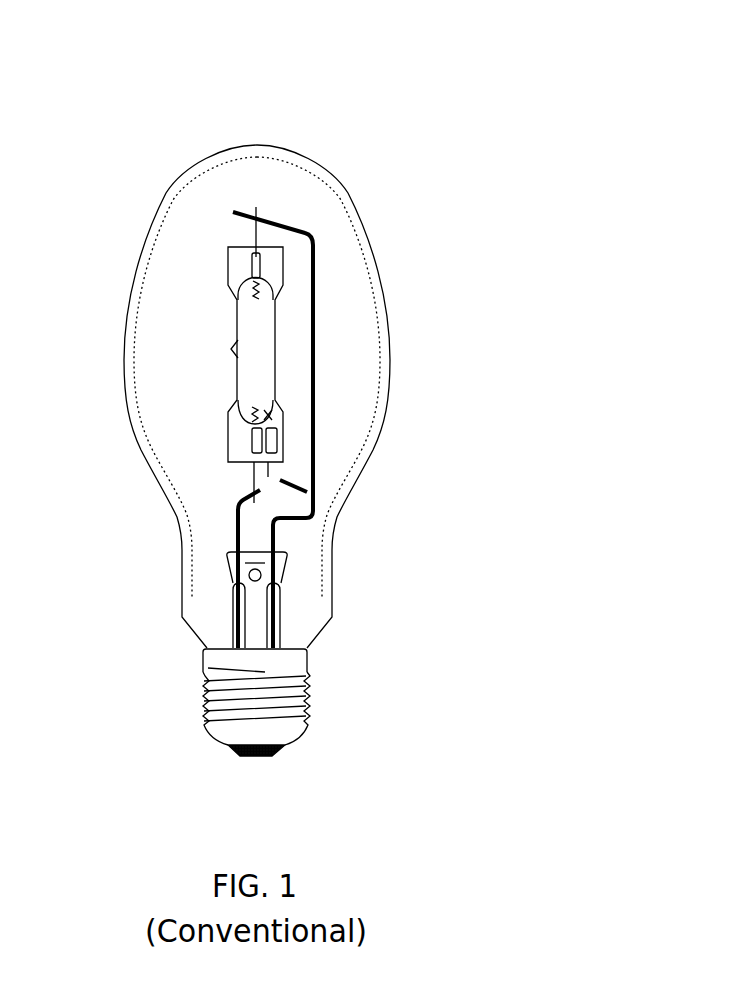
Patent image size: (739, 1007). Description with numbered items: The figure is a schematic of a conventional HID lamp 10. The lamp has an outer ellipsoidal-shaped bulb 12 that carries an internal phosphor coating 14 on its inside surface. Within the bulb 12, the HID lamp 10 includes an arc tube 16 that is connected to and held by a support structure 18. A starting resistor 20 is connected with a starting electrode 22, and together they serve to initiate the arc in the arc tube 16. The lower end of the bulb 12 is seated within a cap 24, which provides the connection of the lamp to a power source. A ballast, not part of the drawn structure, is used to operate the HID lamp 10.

The HID lamp 10 is at (275, 91).
The bulb 12 is at (352, 192).
The internal phosphor coating 14 is at (376, 282).
The arc tube 16 is at (282, 362).
The support structure 18 is at (228, 522).
The starting resistor 20 is at (287, 500).
The starting electrode 22 is at (278, 419).
The cap 24 is at (315, 702).